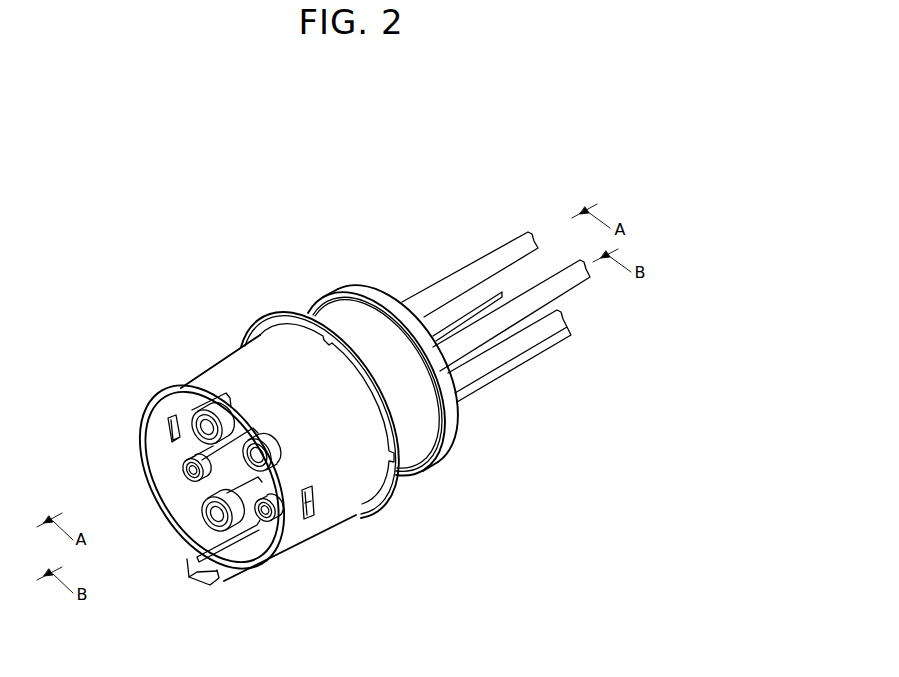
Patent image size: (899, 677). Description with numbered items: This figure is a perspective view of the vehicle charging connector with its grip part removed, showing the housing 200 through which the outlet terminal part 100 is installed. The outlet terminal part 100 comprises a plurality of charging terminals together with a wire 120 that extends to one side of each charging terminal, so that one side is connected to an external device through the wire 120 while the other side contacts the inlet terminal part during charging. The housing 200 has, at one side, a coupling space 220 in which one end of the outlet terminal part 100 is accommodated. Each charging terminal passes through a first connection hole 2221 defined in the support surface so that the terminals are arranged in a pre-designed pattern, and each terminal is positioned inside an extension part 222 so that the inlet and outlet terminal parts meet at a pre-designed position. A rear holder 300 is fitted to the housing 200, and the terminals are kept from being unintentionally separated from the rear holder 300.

The outlet terminal part 100 is at (465, 256).
The wire 120 is at (505, 257).
The housing 200 is at (331, 539).
The coupling space 220 is at (173, 495).
The extension part 222 is at (162, 410).
The first connection hole 2221 is at (208, 513).
The rear holder 300 is at (374, 280).